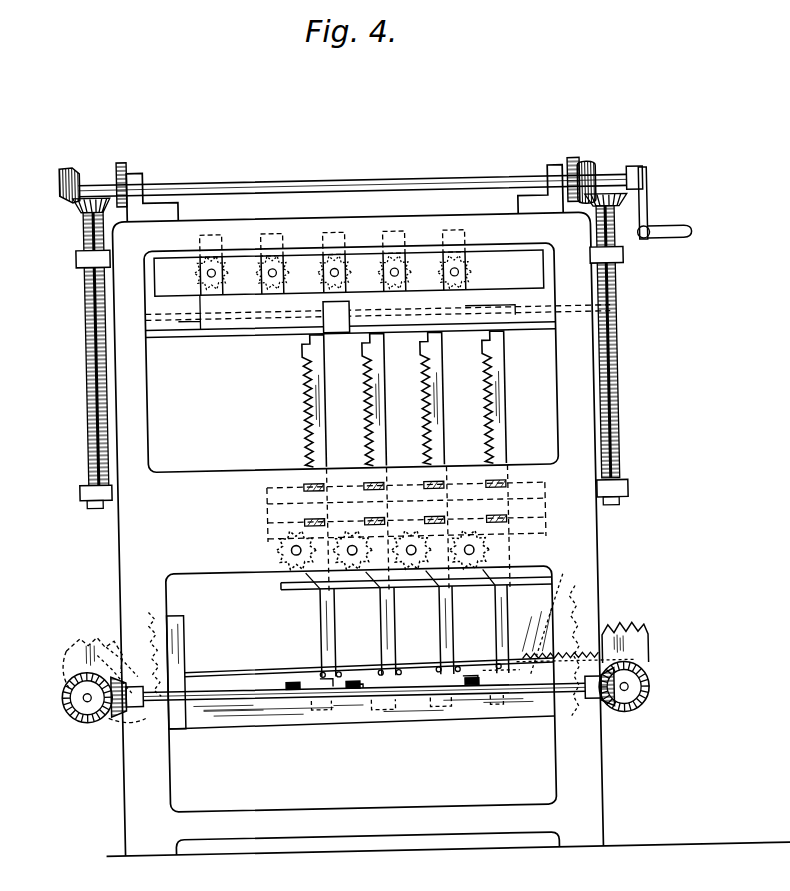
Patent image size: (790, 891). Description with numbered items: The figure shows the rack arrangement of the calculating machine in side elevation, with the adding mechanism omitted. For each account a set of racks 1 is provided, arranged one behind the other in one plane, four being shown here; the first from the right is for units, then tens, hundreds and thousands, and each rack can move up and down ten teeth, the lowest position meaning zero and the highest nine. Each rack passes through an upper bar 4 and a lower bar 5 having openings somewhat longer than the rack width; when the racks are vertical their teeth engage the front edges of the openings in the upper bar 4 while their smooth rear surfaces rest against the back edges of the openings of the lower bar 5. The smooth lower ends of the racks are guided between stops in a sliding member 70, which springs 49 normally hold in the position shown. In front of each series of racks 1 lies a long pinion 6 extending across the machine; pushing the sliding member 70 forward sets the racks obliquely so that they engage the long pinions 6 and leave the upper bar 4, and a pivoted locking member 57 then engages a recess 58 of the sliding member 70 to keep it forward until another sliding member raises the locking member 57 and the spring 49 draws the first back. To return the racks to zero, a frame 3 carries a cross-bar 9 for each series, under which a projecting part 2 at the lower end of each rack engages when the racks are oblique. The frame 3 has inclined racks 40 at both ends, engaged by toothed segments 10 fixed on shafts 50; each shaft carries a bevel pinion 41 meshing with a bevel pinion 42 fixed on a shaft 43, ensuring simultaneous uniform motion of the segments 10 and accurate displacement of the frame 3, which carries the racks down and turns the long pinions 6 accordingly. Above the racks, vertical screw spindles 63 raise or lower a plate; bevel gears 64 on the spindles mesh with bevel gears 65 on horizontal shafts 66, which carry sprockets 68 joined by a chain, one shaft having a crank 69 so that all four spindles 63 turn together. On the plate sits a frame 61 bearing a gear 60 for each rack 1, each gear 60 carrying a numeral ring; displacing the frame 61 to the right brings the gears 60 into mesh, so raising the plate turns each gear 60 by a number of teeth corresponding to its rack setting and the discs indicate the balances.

The rack 1 is at (325, 402).
The projecting part 2 is at (301, 712).
The frame 3 is at (541, 723).
The upper bar 4 is at (449, 484).
The lower bar 5 is at (522, 523).
The long pinion 6 is at (387, 583).
The cross-bar 9 is at (284, 680).
The toothed segment 10 is at (79, 634).
The inclined rack 40 is at (152, 618).
The bevel pinion 41 is at (86, 716).
The bevel pinion 42 is at (110, 710).
The shaft 43 is at (577, 710).
The spring 49 is at (525, 660).
The shaft 50 is at (626, 697).
The pivoted locking member 57 is at (90, 636).
The recess 58 is at (129, 679).
The gear 60 is at (477, 275).
The frame 61 is at (475, 304).
The screw spindle 63 is at (89, 372).
The bevel gear 64 is at (84, 209).
The bevel gear 65 is at (79, 161).
The horizontal shaft 66 is at (266, 178).
The sprocket 68 is at (130, 159).
The crank 69 is at (645, 241).
The sliding member 70 is at (238, 670).